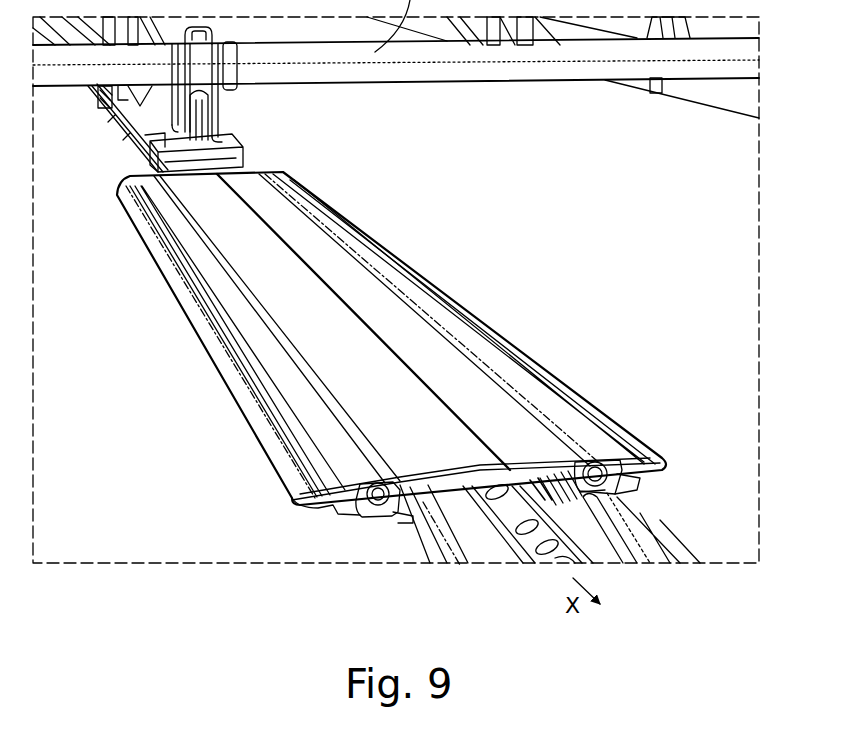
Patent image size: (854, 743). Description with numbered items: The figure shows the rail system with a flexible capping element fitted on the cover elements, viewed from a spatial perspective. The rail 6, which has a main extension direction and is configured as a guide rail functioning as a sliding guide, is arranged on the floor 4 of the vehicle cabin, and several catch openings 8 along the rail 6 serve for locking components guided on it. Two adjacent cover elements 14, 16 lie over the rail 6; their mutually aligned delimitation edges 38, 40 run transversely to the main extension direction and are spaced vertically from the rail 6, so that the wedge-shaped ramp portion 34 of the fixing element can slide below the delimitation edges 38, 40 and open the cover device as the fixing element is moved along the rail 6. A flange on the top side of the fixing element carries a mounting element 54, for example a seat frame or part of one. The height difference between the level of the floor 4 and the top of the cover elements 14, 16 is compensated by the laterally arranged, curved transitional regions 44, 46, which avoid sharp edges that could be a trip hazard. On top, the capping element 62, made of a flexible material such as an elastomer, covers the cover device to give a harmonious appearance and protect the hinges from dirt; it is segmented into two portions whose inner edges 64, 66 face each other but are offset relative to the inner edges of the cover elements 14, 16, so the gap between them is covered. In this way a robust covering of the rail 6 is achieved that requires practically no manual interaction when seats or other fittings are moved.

The floor 4 is at (645, 262).
The rail 6 is at (527, 538).
The catch openings 8 is at (551, 484).
The cover element 14 is at (400, 500).
The cover element 16 is at (600, 495).
The ramp portion 34 is at (227, 167).
The delimitation edge 38 is at (620, 537).
The delimitation edge 40 is at (441, 486).
The transitional region 44 is at (323, 498).
The transitional region 46 is at (627, 467).
The mounting element 54 is at (135, 110).
The capping element 62 is at (377, 283).
The inner edge 64 is at (396, 362).
The inner edge 66 is at (450, 386).